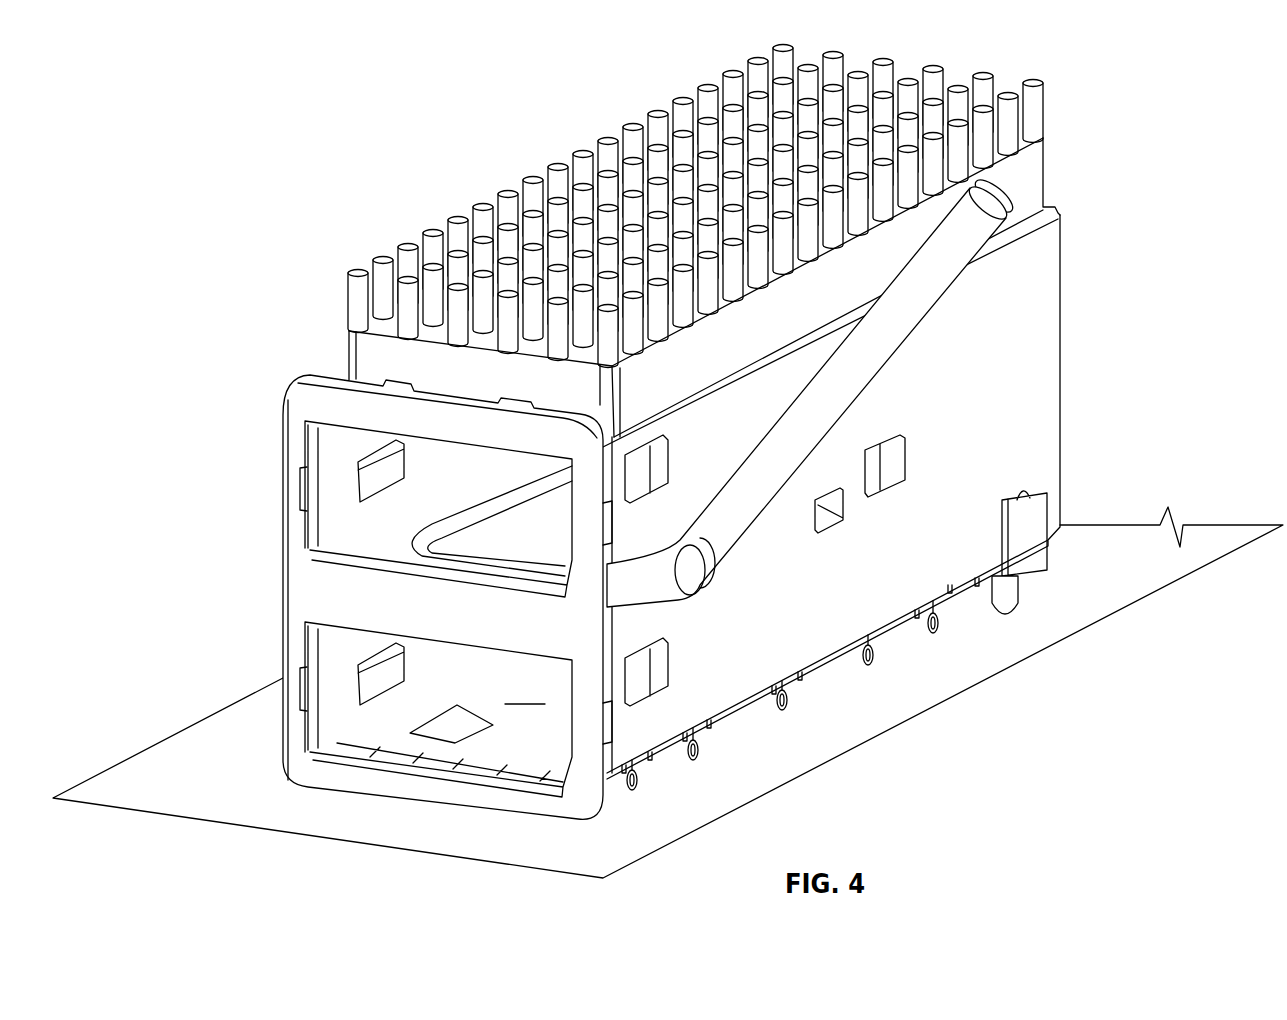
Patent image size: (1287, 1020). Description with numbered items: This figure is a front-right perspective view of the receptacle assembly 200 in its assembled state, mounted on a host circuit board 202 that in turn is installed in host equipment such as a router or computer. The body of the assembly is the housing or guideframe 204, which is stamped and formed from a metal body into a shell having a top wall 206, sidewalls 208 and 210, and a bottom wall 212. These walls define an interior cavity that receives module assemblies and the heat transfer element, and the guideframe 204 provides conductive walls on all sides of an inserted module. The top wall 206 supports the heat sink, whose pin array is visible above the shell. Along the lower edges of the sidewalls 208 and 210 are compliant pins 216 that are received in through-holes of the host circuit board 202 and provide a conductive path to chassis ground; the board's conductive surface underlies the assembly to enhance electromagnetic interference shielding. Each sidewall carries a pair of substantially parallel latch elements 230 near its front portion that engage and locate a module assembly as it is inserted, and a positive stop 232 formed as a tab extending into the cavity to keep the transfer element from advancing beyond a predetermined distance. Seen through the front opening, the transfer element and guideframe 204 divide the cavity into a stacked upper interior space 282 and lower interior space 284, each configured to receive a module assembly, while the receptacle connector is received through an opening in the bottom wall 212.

The receptacle assembly 200 is at (668, 462).
The host circuit board 202 is at (852, 734).
The guideframe 204 is at (757, 423).
The top wall 206 is at (1052, 198).
The sidewall 208 is at (1000, 382).
The sidewall 210 is at (398, 597).
The bottom wall 212 is at (525, 692).
The compliant pins 216 is at (874, 664).
The latch elements 230 is at (402, 468).
The positive stop 232 is at (878, 474).
The upper interior space 282 is at (366, 516).
The lower interior space 284 is at (362, 716).